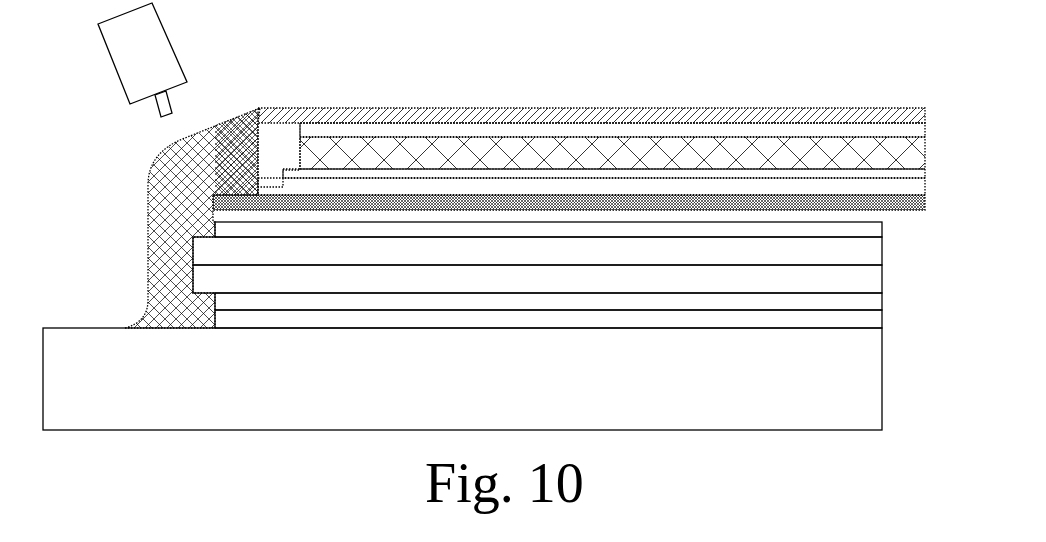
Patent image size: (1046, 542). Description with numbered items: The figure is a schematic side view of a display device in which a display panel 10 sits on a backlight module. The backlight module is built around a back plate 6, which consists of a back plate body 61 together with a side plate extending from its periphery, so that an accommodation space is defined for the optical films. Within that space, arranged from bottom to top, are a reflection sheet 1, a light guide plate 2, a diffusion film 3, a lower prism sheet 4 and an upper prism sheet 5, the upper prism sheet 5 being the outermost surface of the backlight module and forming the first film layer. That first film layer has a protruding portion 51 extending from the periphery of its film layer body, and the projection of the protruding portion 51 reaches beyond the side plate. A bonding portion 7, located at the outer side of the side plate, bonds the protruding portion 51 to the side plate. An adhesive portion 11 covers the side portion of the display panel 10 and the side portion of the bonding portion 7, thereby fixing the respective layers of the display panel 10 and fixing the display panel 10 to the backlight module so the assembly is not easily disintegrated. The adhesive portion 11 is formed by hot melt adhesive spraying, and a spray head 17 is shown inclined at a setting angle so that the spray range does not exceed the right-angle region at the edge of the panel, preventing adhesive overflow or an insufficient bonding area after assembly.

The spray head 17 is at (167, 32).
The adhesive portion 11 is at (168, 243).
The bonding portion 7 is at (228, 150).
The back plate 6 is at (357, 108).
The back plate body 61 is at (331, 112).
The reflection sheet 1 is at (395, 132).
The light guide plate 2 is at (487, 147).
The diffusion film 3 is at (603, 178).
The lower prism sheet 4 is at (707, 188).
The upper prism sheet 5 is at (815, 203).
The protruding portion 51 is at (228, 203).
The display panel 10 is at (885, 222).